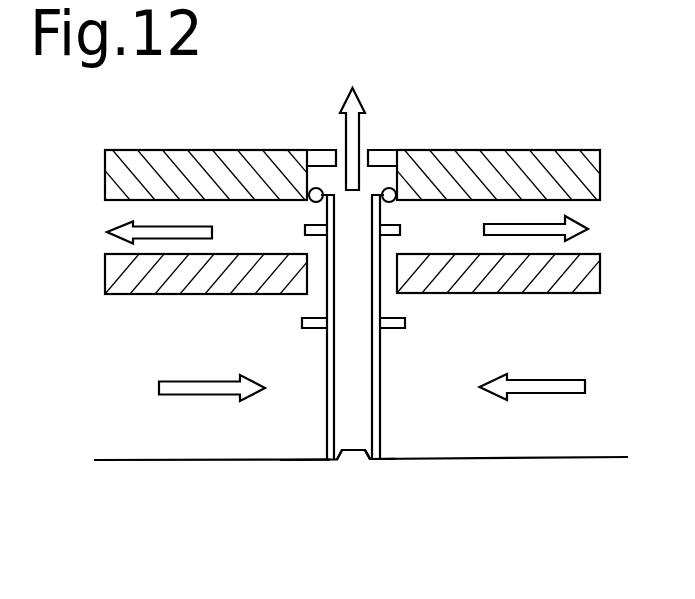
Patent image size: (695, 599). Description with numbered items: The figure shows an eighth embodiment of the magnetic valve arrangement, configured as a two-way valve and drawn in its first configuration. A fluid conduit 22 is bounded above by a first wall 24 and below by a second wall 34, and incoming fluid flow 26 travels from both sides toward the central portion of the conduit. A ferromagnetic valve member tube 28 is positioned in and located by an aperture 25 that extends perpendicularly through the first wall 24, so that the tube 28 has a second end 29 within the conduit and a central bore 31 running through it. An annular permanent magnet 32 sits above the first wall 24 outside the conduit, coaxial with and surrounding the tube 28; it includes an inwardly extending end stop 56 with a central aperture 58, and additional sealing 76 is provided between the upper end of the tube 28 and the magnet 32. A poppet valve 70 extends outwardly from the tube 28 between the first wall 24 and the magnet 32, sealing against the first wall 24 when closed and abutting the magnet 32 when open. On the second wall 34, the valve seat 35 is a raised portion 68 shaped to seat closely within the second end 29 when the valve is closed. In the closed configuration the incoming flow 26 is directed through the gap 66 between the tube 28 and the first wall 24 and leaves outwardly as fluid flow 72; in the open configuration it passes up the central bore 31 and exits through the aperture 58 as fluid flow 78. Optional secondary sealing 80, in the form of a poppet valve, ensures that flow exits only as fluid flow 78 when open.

The fluid conduit 22 is at (177, 436).
The first wall 24 is at (145, 290).
The aperture 25 is at (388, 272).
The arrows / incoming fluid flow 26 is at (193, 387).
The valve member tube 28 is at (383, 370).
The second end 29 is at (383, 423).
The central bore 31 is at (340, 393).
The permanent magnet 32 is at (557, 153).
The second wall 34 is at (288, 462).
The valve seat 35 is at (358, 457).
The end stop 56 is at (383, 155).
The aperture 58 is at (341, 155).
The gap 66 is at (316, 278).
The raised portion 68 is at (348, 455).
The poppet valve 70 is at (400, 227).
The arrows / outward fluid flow 72 is at (122, 230).
The additional sealing 76 is at (311, 202).
The fluid flow 78 is at (355, 122).
The secondary sealing 80 is at (390, 332).